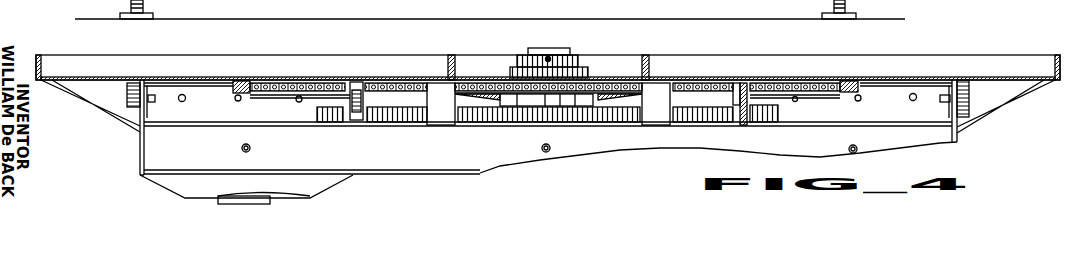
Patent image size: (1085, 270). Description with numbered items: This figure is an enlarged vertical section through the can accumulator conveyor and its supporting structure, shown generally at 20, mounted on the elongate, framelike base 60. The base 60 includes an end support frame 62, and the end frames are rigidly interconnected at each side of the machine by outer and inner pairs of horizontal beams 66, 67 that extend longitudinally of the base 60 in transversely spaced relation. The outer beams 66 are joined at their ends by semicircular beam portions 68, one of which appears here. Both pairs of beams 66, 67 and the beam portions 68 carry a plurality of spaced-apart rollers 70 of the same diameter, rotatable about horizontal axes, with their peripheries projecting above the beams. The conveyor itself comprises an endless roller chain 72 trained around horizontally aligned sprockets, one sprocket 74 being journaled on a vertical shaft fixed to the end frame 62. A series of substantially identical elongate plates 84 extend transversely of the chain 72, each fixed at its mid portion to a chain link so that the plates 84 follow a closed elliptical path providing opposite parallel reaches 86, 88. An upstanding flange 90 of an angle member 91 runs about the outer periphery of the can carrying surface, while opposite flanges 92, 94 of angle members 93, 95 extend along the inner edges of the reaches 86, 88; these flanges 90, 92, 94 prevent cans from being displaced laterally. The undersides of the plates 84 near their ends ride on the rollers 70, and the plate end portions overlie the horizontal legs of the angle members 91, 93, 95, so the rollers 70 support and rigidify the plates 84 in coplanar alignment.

The conveyor apparatus 20 is at (986, 51).
The base 60 is at (968, 146).
The end support frame 62 is at (138, 168).
The outer horizontal beams 66 is at (153, 118).
The inner horizontal beams 67 is at (333, 112).
The semicircular beam portions 68 is at (273, 110).
The rollers 70 is at (132, 105).
The endless roller chain 72 is at (250, 100).
The sprocket 74 is at (383, 86).
The elongate plates 84 is at (207, 82).
The reach 86 is at (795, 80).
The reach 88 is at (326, 80).
The upstanding flange 90 is at (162, 63).
The angle member 91 is at (37, 56).
The flange 92 is at (652, 70).
The angle member 93 is at (648, 58).
The flange 94 is at (456, 70).
The angle member 95 is at (452, 58).